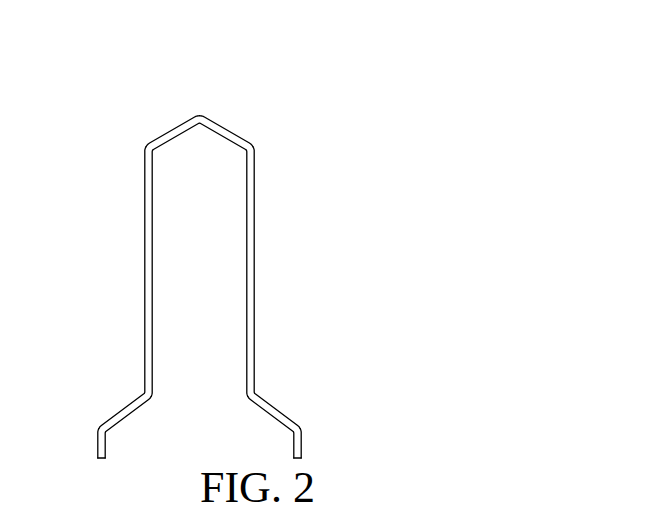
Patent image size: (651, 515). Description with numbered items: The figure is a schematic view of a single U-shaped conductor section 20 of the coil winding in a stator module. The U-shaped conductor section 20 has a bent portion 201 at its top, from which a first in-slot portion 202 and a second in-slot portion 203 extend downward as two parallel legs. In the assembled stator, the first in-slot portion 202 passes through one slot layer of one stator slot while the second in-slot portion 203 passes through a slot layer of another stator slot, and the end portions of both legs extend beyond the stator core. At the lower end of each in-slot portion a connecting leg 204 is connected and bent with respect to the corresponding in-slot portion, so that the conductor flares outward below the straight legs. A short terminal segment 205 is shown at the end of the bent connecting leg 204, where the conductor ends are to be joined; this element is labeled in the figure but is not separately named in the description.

The U-shaped conductor section 20 is at (259, 231).
The bent portion 201 is at (214, 122).
The first in-slot portion 202 is at (145, 275).
The second in-slot portion 203 is at (255, 262).
The connecting leg 204 is at (262, 403).
The foot portion 205 is at (298, 443).